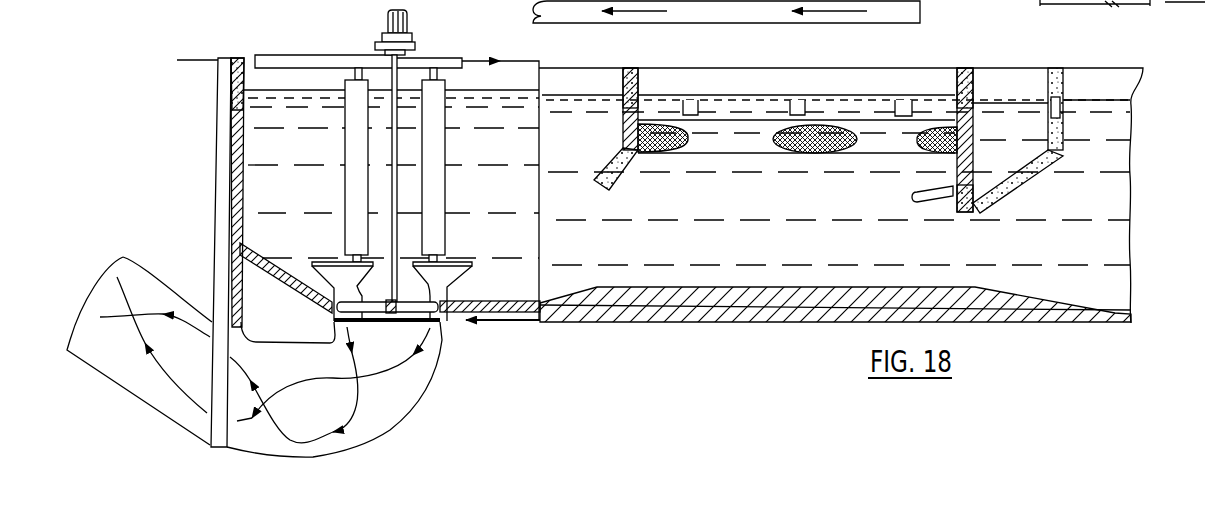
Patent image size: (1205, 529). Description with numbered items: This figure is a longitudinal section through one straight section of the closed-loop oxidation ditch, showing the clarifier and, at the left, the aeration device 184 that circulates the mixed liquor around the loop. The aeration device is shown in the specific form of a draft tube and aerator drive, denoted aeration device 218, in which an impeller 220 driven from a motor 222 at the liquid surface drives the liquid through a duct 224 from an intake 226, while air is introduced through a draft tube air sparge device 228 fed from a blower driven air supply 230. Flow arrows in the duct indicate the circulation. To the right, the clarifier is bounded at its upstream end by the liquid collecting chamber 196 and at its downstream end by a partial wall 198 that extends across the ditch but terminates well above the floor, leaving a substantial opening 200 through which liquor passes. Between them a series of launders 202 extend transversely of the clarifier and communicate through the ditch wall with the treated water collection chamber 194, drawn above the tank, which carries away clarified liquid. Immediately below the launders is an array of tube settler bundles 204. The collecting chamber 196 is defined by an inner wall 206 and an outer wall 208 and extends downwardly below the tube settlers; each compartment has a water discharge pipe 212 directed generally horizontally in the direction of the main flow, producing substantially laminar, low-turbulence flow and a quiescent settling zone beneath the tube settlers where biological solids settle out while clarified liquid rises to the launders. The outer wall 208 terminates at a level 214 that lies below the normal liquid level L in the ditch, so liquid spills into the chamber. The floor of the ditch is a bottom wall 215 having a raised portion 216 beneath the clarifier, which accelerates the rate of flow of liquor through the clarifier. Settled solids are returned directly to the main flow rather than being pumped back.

The aeration device 184 is at (320, 184).
The collection chamber 194 is at (532, 12).
The liquid collecting chamber 196 is at (1012, 90).
The partial wall 198 is at (623, 80).
The opening 200 is at (607, 186).
The launders 202 is at (788, 108).
The tube settler bundles 204 is at (847, 163).
The inner wall 206 is at (965, 76).
The outer wall 208 is at (1060, 146).
The water discharge pipe 212 is at (913, 197).
The level of outer wall 214 is at (1061, 120).
The bottom wall 215 is at (1113, 313).
The raised portion 216 is at (747, 293).
The aeration device 218 is at (447, 360).
The impeller 220 is at (441, 324).
The motor 222 is at (388, 18).
The duct 224 is at (420, 407).
The intake 226 is at (463, 270).
The draft tube air sparge device 228 is at (338, 345).
The blower driven air supply 230 is at (503, 322).
The normal liquid level L is at (1090, 100).